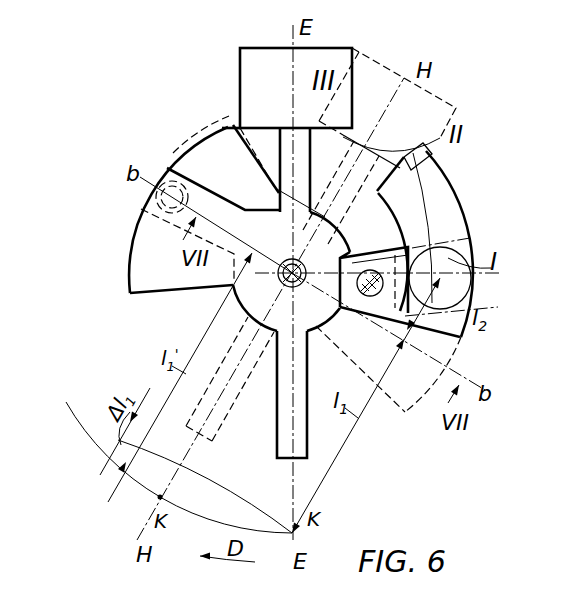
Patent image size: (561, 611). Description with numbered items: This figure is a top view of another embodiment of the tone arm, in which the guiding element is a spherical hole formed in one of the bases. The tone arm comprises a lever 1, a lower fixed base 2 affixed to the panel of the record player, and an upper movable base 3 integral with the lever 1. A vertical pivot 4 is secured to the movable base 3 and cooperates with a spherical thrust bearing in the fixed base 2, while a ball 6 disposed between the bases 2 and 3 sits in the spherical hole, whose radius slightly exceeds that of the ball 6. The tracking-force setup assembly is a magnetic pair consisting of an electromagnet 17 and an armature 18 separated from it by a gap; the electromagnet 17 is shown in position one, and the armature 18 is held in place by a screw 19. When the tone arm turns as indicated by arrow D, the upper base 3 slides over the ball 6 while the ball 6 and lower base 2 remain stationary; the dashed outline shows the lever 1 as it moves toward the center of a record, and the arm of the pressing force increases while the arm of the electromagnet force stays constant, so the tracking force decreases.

The lever 1 is at (298, 432).
The lower fixed base 2 is at (228, 127).
The upper movable base 3 is at (136, 230).
The vertical pivot 4 is at (284, 262).
The ball 6 is at (188, 190).
The electromagnet 17 is at (447, 260).
The armature 18 is at (440, 203).
The screw 19 is at (365, 258).